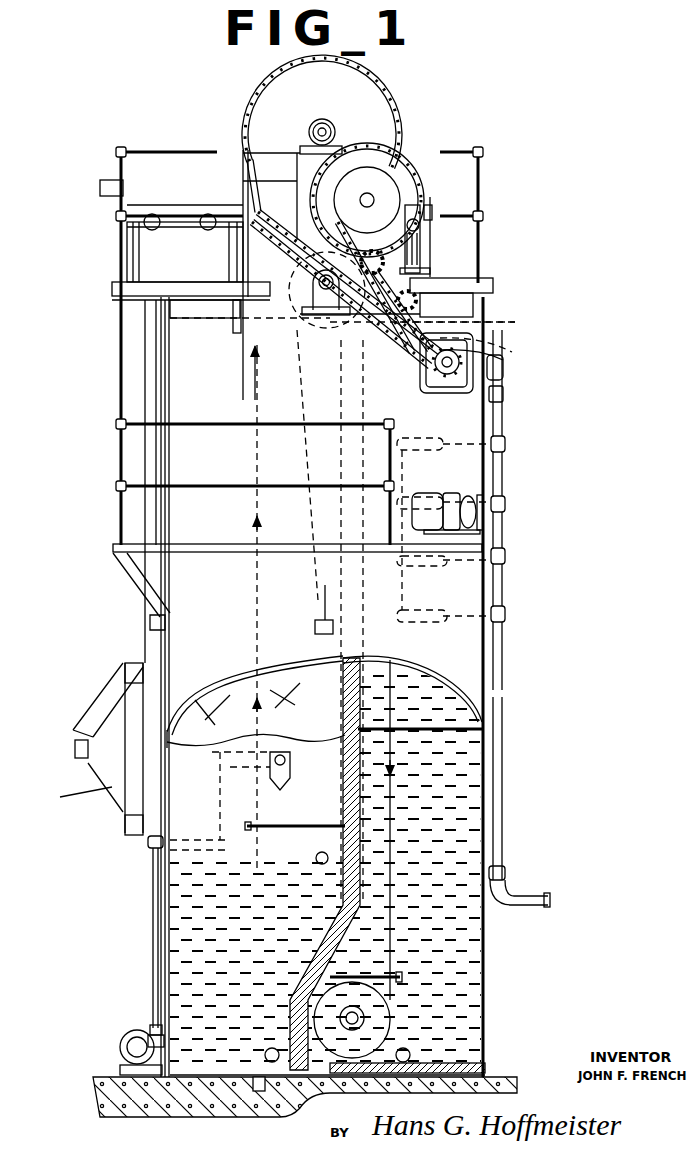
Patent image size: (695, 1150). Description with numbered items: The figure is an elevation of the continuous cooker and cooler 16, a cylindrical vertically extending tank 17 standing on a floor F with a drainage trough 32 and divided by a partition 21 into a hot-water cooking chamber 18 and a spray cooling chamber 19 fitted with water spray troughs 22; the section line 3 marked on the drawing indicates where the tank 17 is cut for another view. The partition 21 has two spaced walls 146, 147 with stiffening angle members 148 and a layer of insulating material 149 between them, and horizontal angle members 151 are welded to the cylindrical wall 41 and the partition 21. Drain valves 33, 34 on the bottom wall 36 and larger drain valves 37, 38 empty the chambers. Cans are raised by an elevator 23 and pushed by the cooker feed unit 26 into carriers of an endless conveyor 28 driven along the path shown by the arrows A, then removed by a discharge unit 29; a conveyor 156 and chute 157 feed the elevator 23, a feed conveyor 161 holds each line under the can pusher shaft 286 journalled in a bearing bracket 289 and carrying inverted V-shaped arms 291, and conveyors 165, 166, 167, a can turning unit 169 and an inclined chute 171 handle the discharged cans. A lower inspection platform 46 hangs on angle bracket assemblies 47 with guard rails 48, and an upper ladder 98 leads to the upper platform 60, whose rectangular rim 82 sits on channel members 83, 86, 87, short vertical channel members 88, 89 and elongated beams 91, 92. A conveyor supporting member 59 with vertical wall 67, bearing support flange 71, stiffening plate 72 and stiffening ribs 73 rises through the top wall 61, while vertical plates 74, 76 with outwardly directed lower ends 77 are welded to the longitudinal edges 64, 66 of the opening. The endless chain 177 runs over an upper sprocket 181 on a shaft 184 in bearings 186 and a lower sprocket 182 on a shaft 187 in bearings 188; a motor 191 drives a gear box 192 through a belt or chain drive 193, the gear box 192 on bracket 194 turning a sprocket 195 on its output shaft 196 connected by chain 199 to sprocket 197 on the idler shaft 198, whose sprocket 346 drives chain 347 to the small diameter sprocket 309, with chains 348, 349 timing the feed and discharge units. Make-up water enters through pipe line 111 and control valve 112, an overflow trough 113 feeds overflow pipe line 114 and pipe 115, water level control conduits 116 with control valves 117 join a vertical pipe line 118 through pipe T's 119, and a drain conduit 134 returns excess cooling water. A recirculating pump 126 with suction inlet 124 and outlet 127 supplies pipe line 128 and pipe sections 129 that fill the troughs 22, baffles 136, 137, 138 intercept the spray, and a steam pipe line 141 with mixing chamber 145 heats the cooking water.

The continuous cooker and cooler 16 is at (512, 124).
The tank 17 is at (490, 960).
The cooking chamber 18 is at (485, 795).
The cooling chamber 19 is at (170, 910).
The partition 21 is at (362, 672).
The water spray troughs 22 is at (270, 776).
The elevator 23 is at (140, 622).
The cooker feed unit 26 is at (437, 210).
The endless conveyor 28 is at (298, 592).
The discharge unit 29 is at (218, 172).
The drainage trough 32 is at (300, 1085).
The drain valve 33 is at (260, 1080).
The drain valve 34 is at (330, 1085).
The bottom wall 36 is at (218, 1078).
The drain valve 37 is at (265, 1052).
The drain valve 38 is at (410, 1053).
The cylindrical wall 41 is at (480, 406).
The lower inspection platform 46 is at (110, 544).
The angle bracket assemblies 47 is at (133, 583).
The guard rails 48 is at (225, 458).
The conveyor supporting member 59 is at (246, 242).
The upper platform 60 is at (248, 248).
The top wall 61 is at (207, 317).
The longitudinal edge 64 is at (243, 315).
The longitudinal edge 66 is at (354, 333).
The vertical wall 67 is at (245, 235).
The bearing support flange 71 is at (240, 152).
The stiffening plate 72 is at (268, 180).
The stiffening ribs 73 is at (291, 157).
The vertical plate 74 is at (238, 338).
The vertical plate 76 is at (357, 342).
The outwardly directed lower ends 77 is at (236, 355).
The rectangular rim 82 is at (112, 283).
The channel member 83 is at (220, 287).
The channel member 86 is at (112, 298).
The channel member 87 is at (490, 286).
The short vertical channel member 88 is at (237, 330).
The short vertical channel member 89 is at (480, 316).
The elongated beam 91 is at (170, 307).
The elongated beam 92 is at (475, 305).
The upper ladder 98 is at (150, 380).
The pipe line 111 is at (512, 336).
The control valve 112 is at (510, 331).
The overflow trough 113 is at (505, 348).
The overflow pipe line 114 is at (497, 363).
The pipe 115 is at (550, 900).
The water level control conduits 116 is at (415, 400).
The control valve 117 is at (428, 490).
The vertical pipe line 118 is at (500, 472).
The pipe T 119 is at (505, 872).
The suction inlet 124 is at (155, 1018).
The recirculating pump 126 is at (125, 1048).
The outlet 127 is at (150, 1035).
The pipe line 128 is at (217, 810).
The pipe sections 129 is at (222, 753).
The drain conduit 134 is at (315, 855).
The baffle 136 is at (216, 680).
The baffle 137 is at (283, 673).
The baffle 138 is at (280, 688).
The steam pipe line 141 is at (365, 1012).
The steam and water mixing chamber 145 is at (372, 1024).
The partition wall 146 is at (352, 655).
The partition wall 147 is at (360, 662).
The stiffening angle members 148 is at (330, 716).
The insulating material 149 is at (340, 806).
The angle members 151 is at (245, 824).
The conveyor 156 is at (72, 762).
The chute 157 is at (110, 797).
The conveyor 161 is at (420, 243).
The conveyor 165 is at (236, 212).
The intermediate conveyor 166 is at (118, 214).
The conveyor 167 is at (122, 233).
The can turning unit 169 is at (117, 180).
The inclined chute 171 is at (105, 702).
The endless chain 177 is at (387, 88).
The upper sprocket 181 is at (340, 96).
The sprocket 182 is at (300, 342).
The shaft 184 is at (340, 104).
The bearing 186 is at (335, 136).
The shaft 187 is at (322, 280).
The bearing 188 is at (318, 296).
The motor 191 is at (475, 530).
The speed reducing gear box 192 is at (502, 387).
The belt or chain drive 193 is at (483, 423).
The bracket 194 is at (430, 393).
The sprocket 195 is at (445, 371).
The output shaft 196 is at (442, 361).
The sprocket 197 is at (400, 170).
The idler shaft 198 is at (367, 207).
The chain 199 is at (402, 156).
The can pusher shaft 286 is at (408, 168).
The bearing bracket 289 is at (400, 205).
The inverted V-shaped arms 291 is at (425, 225).
The small diameter sprocket 309 is at (310, 252).
The sprocket 346 is at (405, 186).
The chain 347 is at (297, 199).
The chain 348 is at (372, 268).
The chain 349 is at (385, 259).
The arrows A is at (255, 378).
The floor F is at (95, 1090).
The section line 3 is at (148, 640).